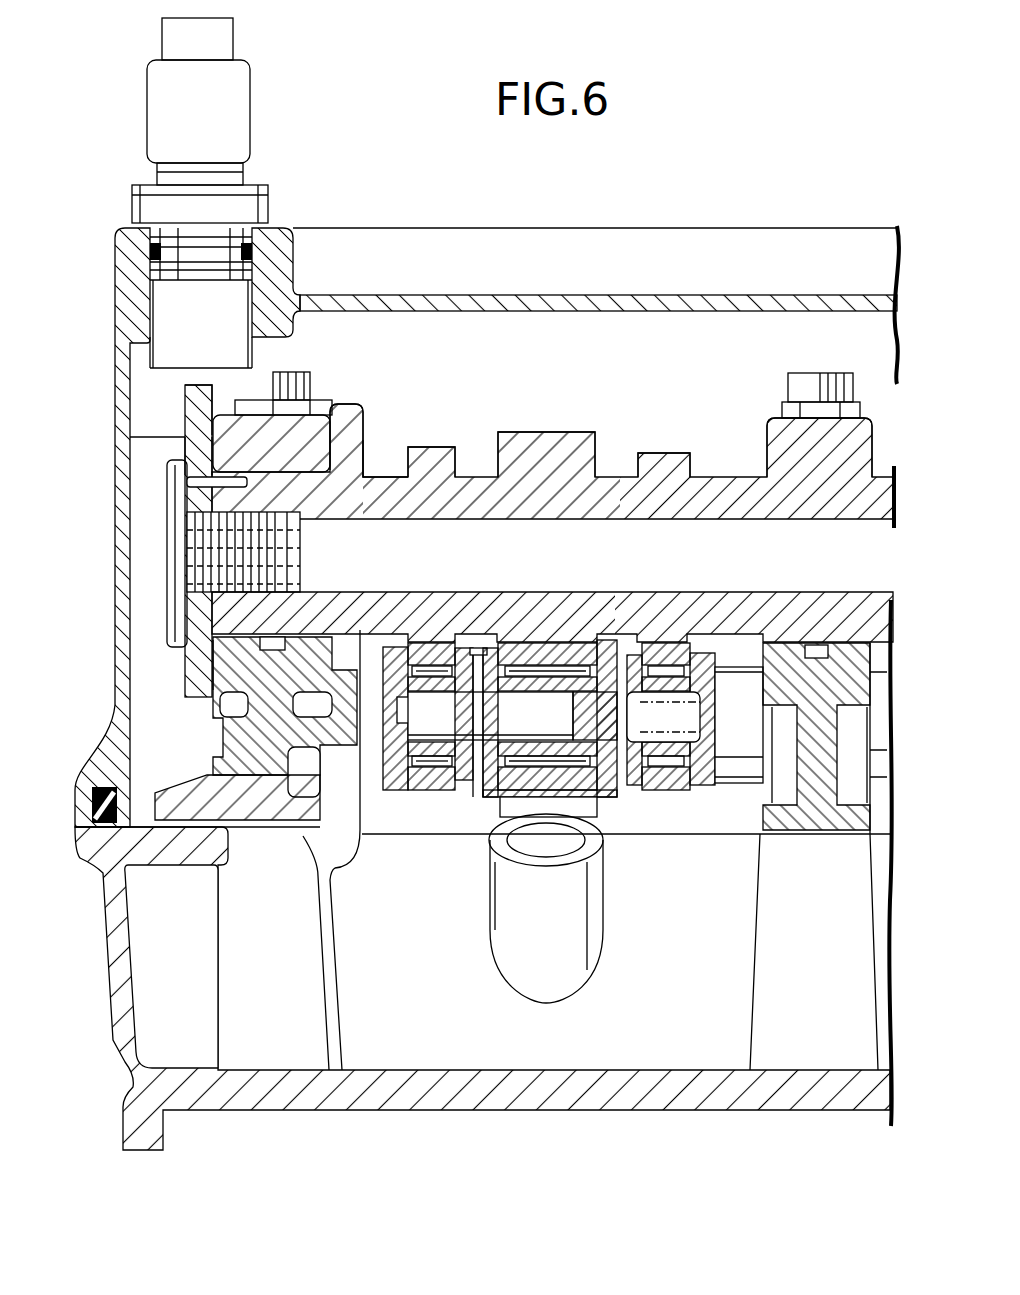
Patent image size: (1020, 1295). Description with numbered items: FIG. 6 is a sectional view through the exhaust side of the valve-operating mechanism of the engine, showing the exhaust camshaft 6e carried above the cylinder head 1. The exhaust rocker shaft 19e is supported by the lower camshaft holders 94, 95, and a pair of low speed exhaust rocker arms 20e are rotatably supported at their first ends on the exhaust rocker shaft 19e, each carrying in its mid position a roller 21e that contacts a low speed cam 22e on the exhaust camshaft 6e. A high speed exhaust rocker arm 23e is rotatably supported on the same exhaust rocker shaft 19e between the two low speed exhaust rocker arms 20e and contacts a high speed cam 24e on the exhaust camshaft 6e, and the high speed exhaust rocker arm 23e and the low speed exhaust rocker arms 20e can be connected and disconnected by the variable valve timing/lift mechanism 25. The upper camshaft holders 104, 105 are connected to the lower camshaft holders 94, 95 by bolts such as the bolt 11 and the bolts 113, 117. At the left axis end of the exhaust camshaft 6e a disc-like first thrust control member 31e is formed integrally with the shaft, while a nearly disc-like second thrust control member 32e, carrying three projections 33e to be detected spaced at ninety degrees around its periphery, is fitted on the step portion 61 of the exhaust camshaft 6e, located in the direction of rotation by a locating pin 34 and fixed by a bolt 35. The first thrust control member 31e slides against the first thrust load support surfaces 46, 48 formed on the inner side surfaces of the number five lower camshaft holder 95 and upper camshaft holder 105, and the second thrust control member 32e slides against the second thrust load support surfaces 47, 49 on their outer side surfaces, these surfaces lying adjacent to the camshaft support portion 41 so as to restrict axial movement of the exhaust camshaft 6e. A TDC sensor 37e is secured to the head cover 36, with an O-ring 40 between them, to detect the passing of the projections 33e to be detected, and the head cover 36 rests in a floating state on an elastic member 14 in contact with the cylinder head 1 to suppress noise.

The cylinder head 1 is at (105, 988).
The bolt 11 is at (138, 823).
The elastic member 14 is at (90, 822).
The exhaust camshaft 6e is at (619, 478).
The exhaust rocker shaft 19e is at (749, 762).
The low speed exhaust rocker arm 20e is at (390, 655).
The roller 21e is at (432, 780).
The low speed cam 22e is at (427, 455).
The high speed exhaust rocker arm 23e is at (495, 788).
The high speed cam 24e is at (539, 447).
The variable valve timing/lift mechanism 25 is at (614, 640).
The first thrust control member 31e is at (346, 410).
The second thrust control member 32e is at (184, 417).
The projection to be detected 33e is at (187, 390).
The locating pin 34 is at (250, 482).
The bolt 35 is at (165, 503).
The head cover 36 is at (571, 295).
The TDC sensor 37e is at (238, 124).
The O-ring 40 is at (247, 246).
The camshaft support portion 41 is at (309, 647).
The first thrust load support surface 46 is at (347, 665).
The second thrust load support surface 47 is at (214, 672).
The first thrust load support surface 48 is at (335, 441).
The second thrust load support surface 49 is at (210, 437).
The step portion 61 is at (214, 617).
The lower camshaft holder 94 is at (810, 812).
The lower camshaft holder 95 is at (256, 805).
The upper camshaft holder 104 is at (772, 440).
The upper camshaft holder 105 is at (315, 428).
The bolt 113 is at (291, 384).
The bolt 117 is at (838, 385).